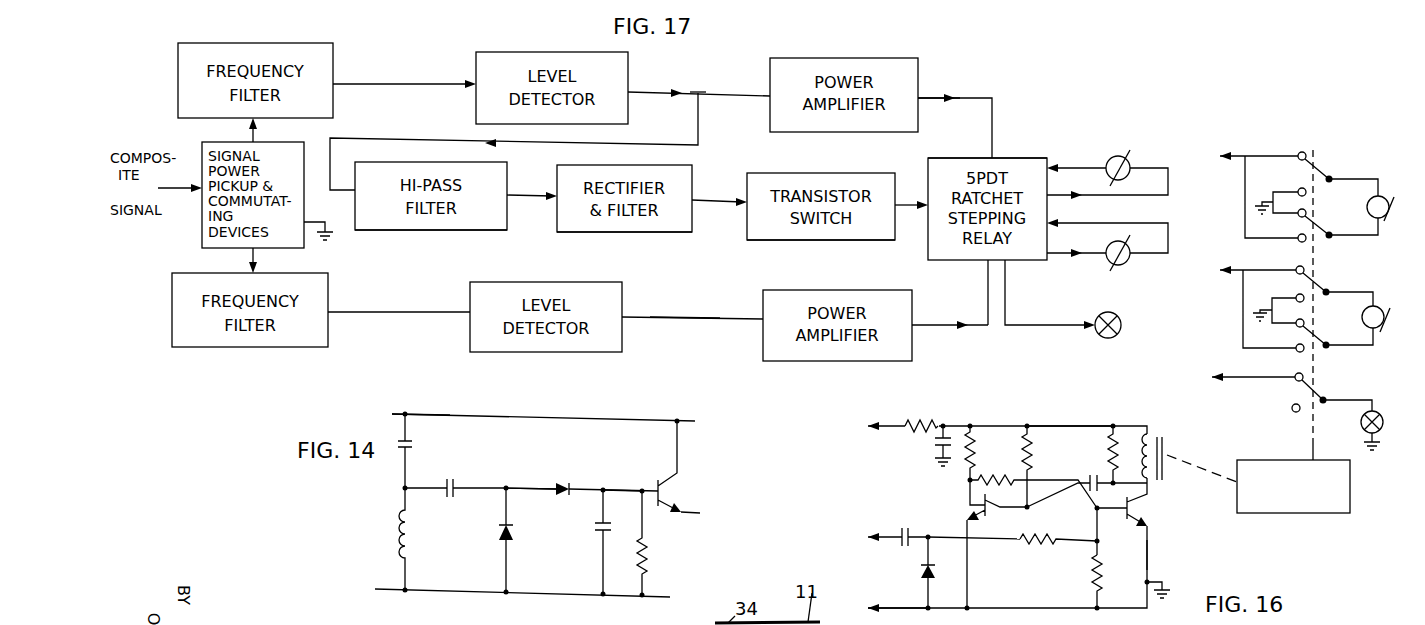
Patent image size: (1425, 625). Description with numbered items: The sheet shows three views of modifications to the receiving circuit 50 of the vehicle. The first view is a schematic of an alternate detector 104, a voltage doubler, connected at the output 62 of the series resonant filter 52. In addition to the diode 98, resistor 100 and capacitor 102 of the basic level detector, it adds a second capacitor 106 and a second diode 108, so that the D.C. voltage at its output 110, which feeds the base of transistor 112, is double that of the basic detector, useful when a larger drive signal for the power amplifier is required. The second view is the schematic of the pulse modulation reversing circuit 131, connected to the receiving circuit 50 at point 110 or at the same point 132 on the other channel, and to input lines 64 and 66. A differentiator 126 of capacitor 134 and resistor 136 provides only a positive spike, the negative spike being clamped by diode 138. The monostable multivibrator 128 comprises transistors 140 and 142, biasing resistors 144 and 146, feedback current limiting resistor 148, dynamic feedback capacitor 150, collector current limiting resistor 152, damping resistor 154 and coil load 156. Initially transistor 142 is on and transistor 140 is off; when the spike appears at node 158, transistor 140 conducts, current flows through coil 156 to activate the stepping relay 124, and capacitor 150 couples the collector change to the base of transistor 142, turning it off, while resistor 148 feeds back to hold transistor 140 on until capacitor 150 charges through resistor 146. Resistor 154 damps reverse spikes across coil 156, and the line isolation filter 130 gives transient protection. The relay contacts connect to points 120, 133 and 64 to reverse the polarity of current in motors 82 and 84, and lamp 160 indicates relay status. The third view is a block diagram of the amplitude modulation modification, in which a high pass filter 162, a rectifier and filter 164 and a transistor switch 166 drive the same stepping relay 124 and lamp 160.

In FIG. 17, the receiving circuit 50 is at (942, 77).
In FIG. 17, the detector output 110 is at (698, 92).
In FIG. 16, the detector output 110 is at (867, 535).
In FIG. 14, the detector output 110 is at (618, 491).
In FIG. 17, the stepping relay 124 is at (1017, 150).
In FIG. 16, the stepping relay 124 is at (1368, 498).
In FIG. 17, the connection point on channel 83 132 is at (691, 317).
In FIG. 17, the lamp 160 is at (1119, 317).
In FIG. 16, the lamp 160 is at (1385, 413).
In FIG. 17, the high pass filter 162 is at (436, 237).
In FIG. 17, the filter 164 is at (618, 239).
In FIG. 17, the transistor switch 166 is at (834, 247).
In FIG. 14, the series resonant filter 52 is at (403, 402).
In FIG. 14, the filter output 62 is at (404, 489).
In FIG. 14, the diode 98 is at (557, 493).
In FIG. 14, the resistor 100 is at (646, 543).
In FIG. 14, the capacitor 102 is at (597, 528).
In FIG. 14, the alternate detector 104 is at (534, 470).
In FIG. 14, the second capacitor 106 is at (455, 478).
In FIG. 14, the second diode 108 is at (510, 533).
In FIG. 14, the transistor 112 is at (668, 498).
In FIG. 16, the input terminal 64 is at (1211, 378).
In FIG. 16, the input terminal 66 is at (866, 606).
In FIG. 16, the motor 82 is at (1388, 201).
In FIG. 16, the motor 84 is at (1382, 311).
In FIG. 16, the output 120 is at (1221, 157).
In FIG. 16, the differentiator 126 is at (928, 543).
In FIG. 16, the monostable multivibrator 128 is at (1079, 400).
In FIG. 16, the line isolation filter 130 is at (918, 411).
In FIG. 16, the reversing circuit 131 is at (1170, 556).
In FIG. 16, the relay contact connection point 133 is at (1219, 271).
In FIG. 16, the capacitor 134 is at (912, 530).
In FIG. 16, the resistor 136 is at (1058, 554).
In FIG. 16, the diode 138 is at (933, 574).
In FIG. 16, the transistor 140 is at (1135, 506).
In FIG. 16, the transistor 142 is at (982, 505).
In FIG. 16, the biasing resistor 144 is at (1100, 574).
In FIG. 16, the biasing resistor 146 is at (1034, 457).
In FIG. 16, the feedback current limiting resistor 148 is at (1033, 482).
In FIG. 16, the dynamic feedback capacitor 150 is at (1095, 489).
In FIG. 16, the collector current limiting resistor 152 is at (965, 470).
In FIG. 16, the damping resistor 154 is at (1108, 449).
In FIG. 16, the coil load 156 is at (1167, 446).
In FIG. 16, the node 158 is at (1099, 541).